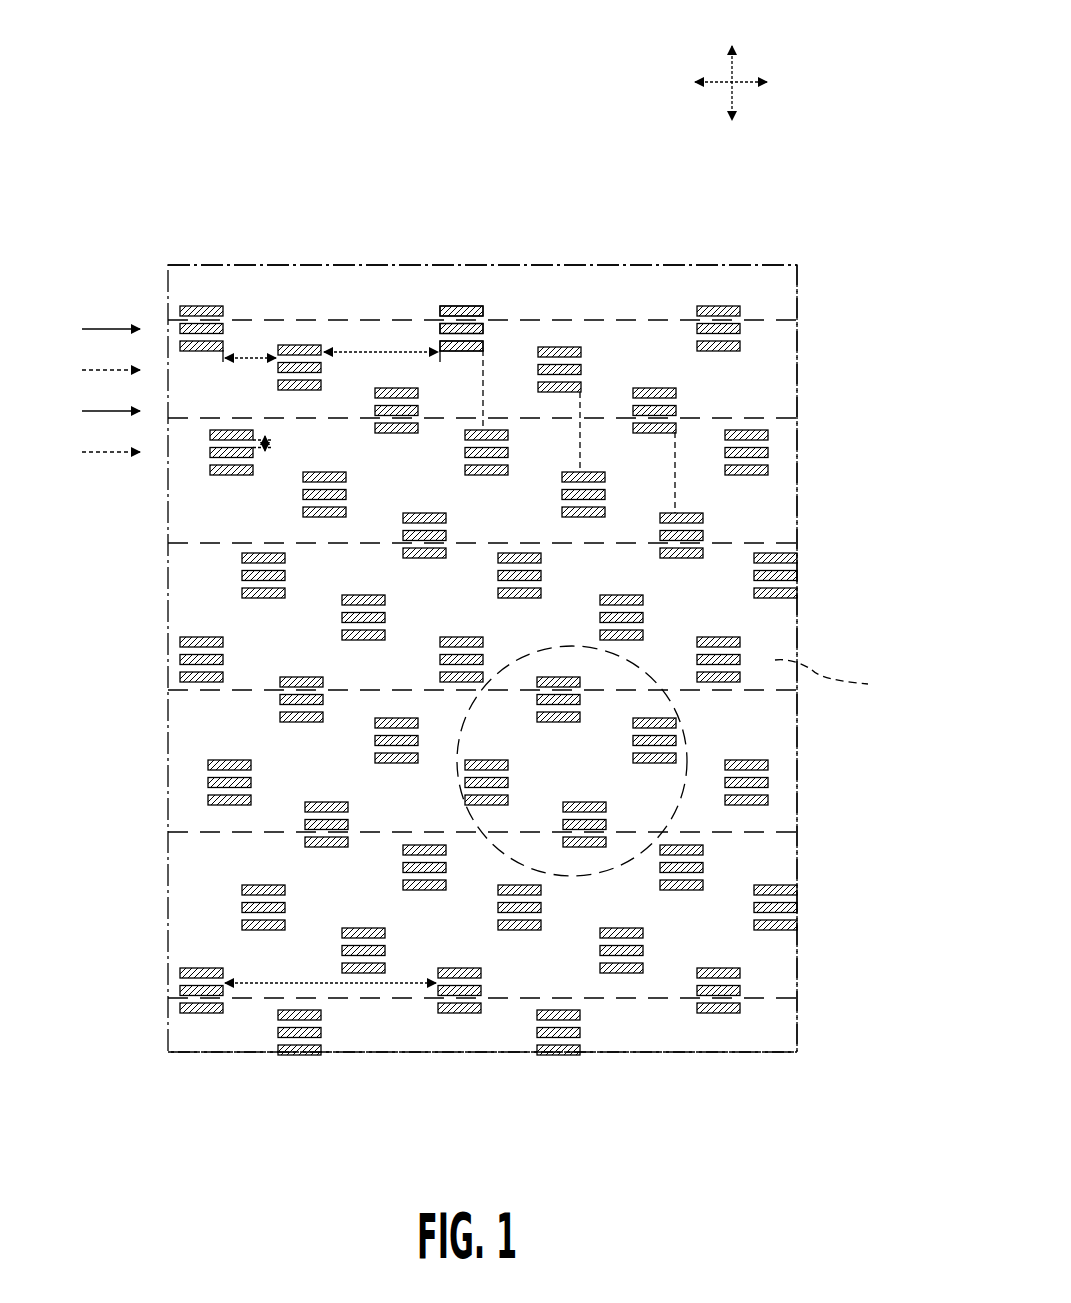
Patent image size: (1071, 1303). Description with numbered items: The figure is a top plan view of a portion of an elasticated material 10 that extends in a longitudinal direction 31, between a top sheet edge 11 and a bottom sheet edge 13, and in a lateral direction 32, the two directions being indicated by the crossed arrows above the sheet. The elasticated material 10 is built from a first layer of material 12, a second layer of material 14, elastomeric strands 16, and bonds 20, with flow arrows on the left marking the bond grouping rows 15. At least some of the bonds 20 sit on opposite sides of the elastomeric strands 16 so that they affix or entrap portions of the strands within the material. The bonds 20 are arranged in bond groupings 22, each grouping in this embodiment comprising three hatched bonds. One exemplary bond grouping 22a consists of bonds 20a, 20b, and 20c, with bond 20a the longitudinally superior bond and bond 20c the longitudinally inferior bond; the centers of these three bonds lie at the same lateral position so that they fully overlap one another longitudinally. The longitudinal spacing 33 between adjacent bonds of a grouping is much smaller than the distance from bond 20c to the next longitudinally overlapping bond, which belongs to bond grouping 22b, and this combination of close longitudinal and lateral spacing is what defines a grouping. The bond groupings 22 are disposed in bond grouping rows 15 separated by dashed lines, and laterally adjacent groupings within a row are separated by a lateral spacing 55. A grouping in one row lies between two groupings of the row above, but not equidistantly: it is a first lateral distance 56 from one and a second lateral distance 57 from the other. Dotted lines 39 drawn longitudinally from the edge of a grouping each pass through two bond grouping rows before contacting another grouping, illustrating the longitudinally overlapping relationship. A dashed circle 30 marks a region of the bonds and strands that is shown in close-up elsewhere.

The elasticated material 10 is at (797, 437).
The top sheet edge 11 is at (560, 265).
The first layer of material 12 is at (787, 612).
The bottom sheet edge 13 is at (462, 1052).
The second layer of material 14 is at (834, 680).
The bond grouping row 15 is at (95, 391).
The elastomeric strands 16 is at (613, 320).
The bond 20 is at (388, 598).
The bond 20a is at (461, 306).
The bond 20b is at (440, 328).
The bond 20c is at (462, 352).
The bond grouping 22 is at (453, 458).
The bond grouping 22a is at (494, 306).
The bond grouping 22b is at (501, 481).
The detail region 30 is at (627, 862).
The longitudinal direction 31 is at (732, 68).
The lateral direction 32 is at (745, 85).
The longitudinal spacing 33 is at (272, 445).
The dotted lines 39 is at (483, 398).
The lateral spacing 55 is at (305, 983).
The first lateral distance 56 is at (240, 364).
The second lateral distance 57 is at (370, 356).